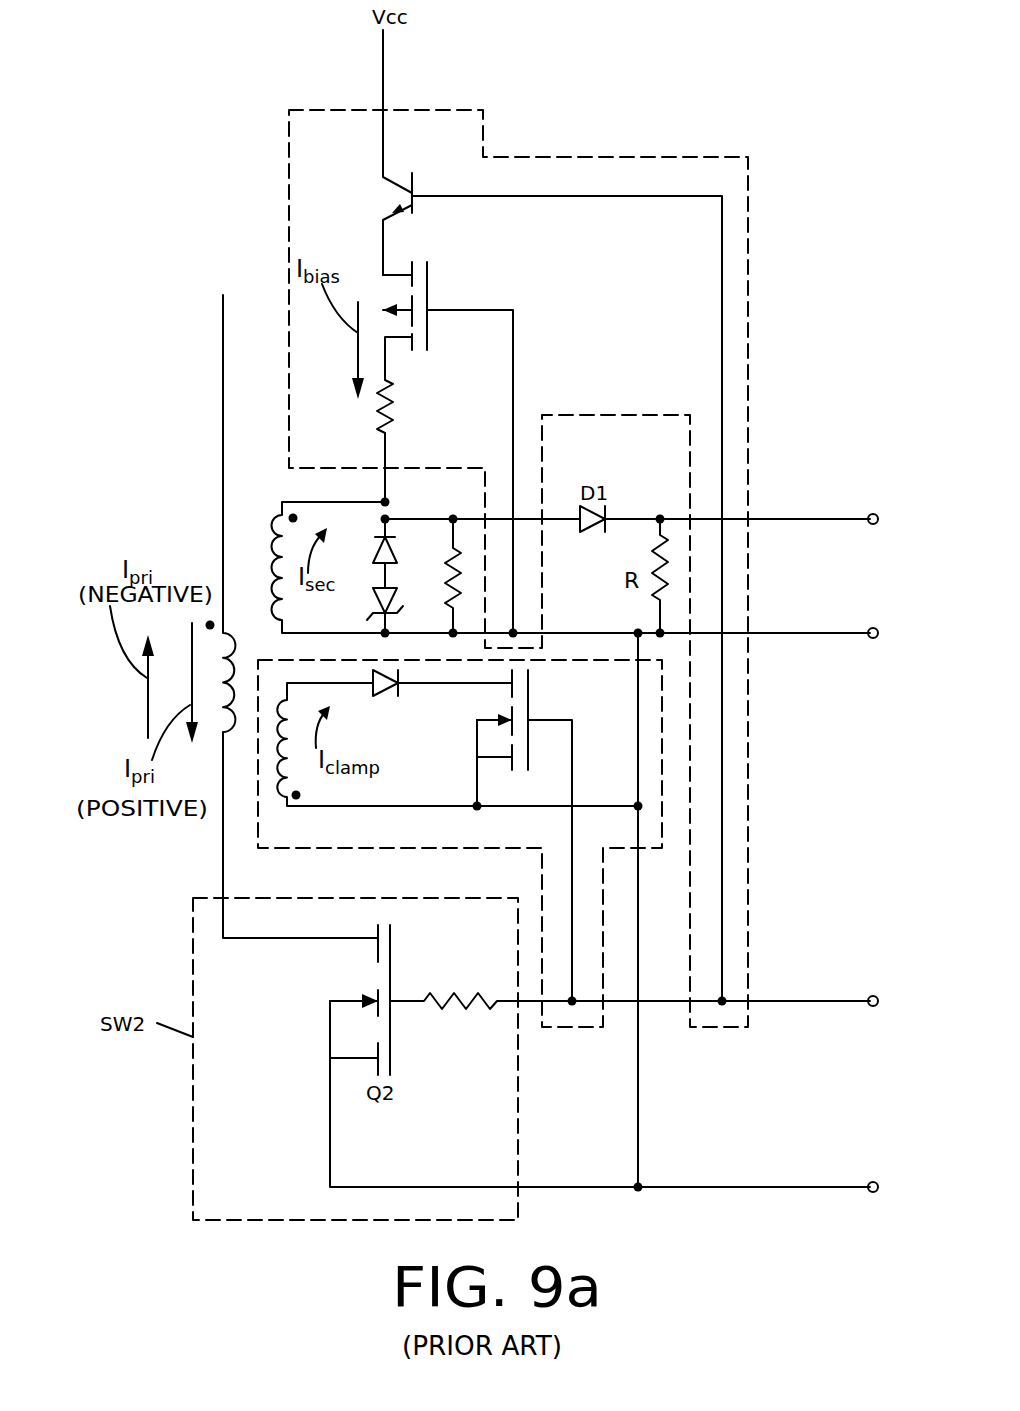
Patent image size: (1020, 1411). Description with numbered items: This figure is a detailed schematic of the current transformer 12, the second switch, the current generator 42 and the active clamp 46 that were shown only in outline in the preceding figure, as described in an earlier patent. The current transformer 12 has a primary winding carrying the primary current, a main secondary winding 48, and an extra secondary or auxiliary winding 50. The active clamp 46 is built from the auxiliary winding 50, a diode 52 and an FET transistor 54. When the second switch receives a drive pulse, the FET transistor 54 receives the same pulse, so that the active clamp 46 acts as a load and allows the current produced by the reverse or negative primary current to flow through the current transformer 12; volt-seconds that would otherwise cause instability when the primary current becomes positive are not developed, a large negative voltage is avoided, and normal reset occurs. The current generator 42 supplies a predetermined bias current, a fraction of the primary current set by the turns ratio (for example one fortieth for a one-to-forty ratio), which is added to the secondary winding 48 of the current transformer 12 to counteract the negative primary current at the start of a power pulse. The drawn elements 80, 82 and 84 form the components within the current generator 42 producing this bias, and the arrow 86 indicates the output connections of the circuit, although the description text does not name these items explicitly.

The current transformer 12 is at (200, 455).
The current generator 42 is at (485, 125).
The active clamp 46 is at (373, 850).
The main secondary winding 48 is at (273, 523).
The auxiliary winding 50 is at (272, 797).
The diode 52 is at (390, 697).
The FET transistor 54 is at (532, 703).
The bias transistor 80 is at (412, 175).
The bias MOSFET 82 is at (413, 262).
The bias resistor 84 is at (393, 405).
The output terminals 86 is at (840, 1092).